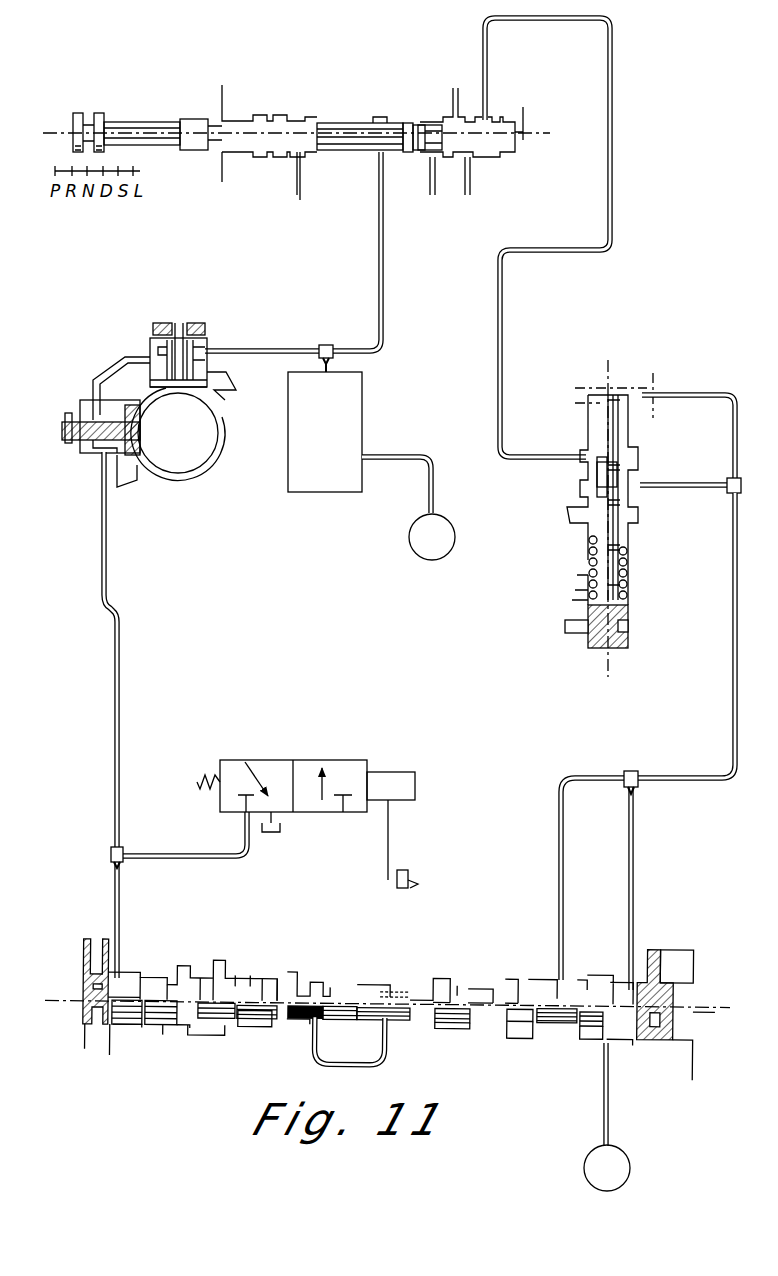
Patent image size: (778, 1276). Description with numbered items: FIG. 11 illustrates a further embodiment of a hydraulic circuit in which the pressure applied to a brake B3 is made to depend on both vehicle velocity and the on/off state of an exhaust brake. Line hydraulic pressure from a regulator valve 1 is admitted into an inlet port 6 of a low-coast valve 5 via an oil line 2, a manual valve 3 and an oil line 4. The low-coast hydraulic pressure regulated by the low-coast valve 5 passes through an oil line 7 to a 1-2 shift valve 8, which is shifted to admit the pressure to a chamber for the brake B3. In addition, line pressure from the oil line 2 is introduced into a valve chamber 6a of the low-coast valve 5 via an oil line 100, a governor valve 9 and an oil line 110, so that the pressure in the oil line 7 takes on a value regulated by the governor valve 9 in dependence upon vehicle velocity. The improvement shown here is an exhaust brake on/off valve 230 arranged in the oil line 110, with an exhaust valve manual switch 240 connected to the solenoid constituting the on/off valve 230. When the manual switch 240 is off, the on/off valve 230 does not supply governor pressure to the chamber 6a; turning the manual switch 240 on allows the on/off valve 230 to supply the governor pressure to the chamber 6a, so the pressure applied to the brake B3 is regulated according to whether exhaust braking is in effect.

The regulator valve 1 is at (280, 462).
The oil line 2 is at (383, 266).
The manual valve 3 is at (386, 104).
The oil line 4 is at (613, 113).
The low-coast valve 5 is at (684, 383).
The inlet port 6 is at (581, 447).
The valve chamber 6a is at (622, 571).
The oil line 7 is at (731, 643).
The 1-2 shift valve 8 is at (466, 972).
The governor valve 9 is at (98, 362).
The oil line 100 is at (270, 350).
The oil line 110 is at (165, 855).
The exhaust brake on/off valve 230 is at (298, 822).
The exhaust valve manual switch 240 is at (405, 890).
The brake B3 is at (591, 1157).